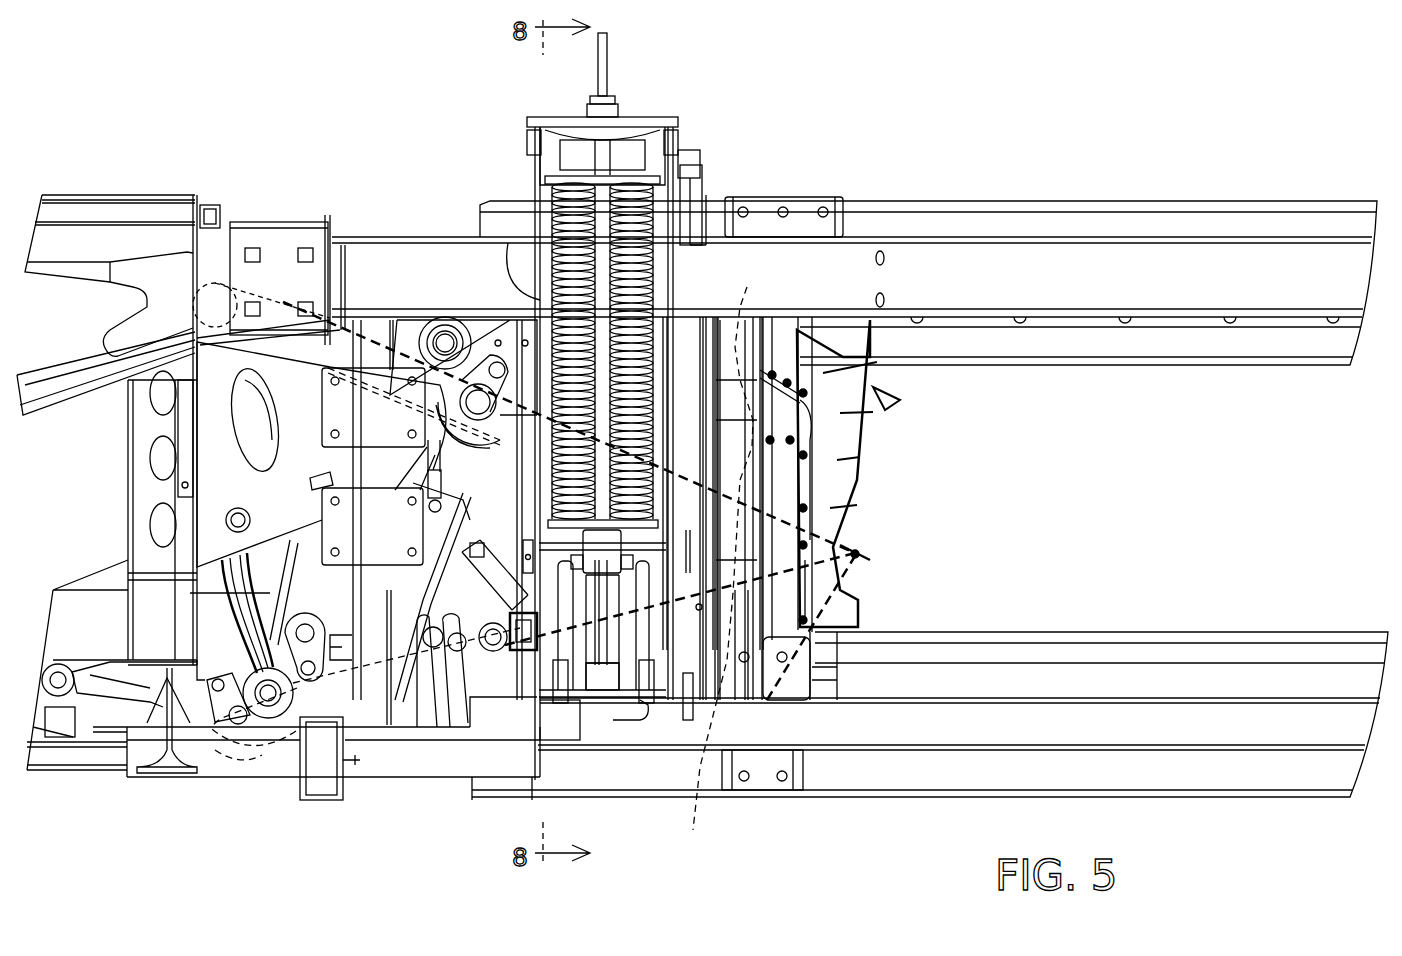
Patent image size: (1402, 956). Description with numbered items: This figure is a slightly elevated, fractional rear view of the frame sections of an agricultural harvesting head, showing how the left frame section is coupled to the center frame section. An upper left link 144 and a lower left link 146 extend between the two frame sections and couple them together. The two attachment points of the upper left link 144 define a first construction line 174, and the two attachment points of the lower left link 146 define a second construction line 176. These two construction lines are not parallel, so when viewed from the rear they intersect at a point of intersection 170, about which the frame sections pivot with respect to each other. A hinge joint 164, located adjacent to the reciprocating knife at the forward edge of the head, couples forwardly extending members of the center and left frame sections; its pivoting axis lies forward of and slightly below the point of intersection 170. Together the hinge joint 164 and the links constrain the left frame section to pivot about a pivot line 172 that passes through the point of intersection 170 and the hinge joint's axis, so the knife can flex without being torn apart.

The upper left link 144 is at (345, 345).
The lower left link 146 is at (393, 740).
The hinge joint 164 is at (774, 700).
The point of intersection 170 is at (855, 555).
The pivot line 172 is at (835, 597).
The first construction line 174 is at (751, 479).
The second construction line 176 is at (739, 728).